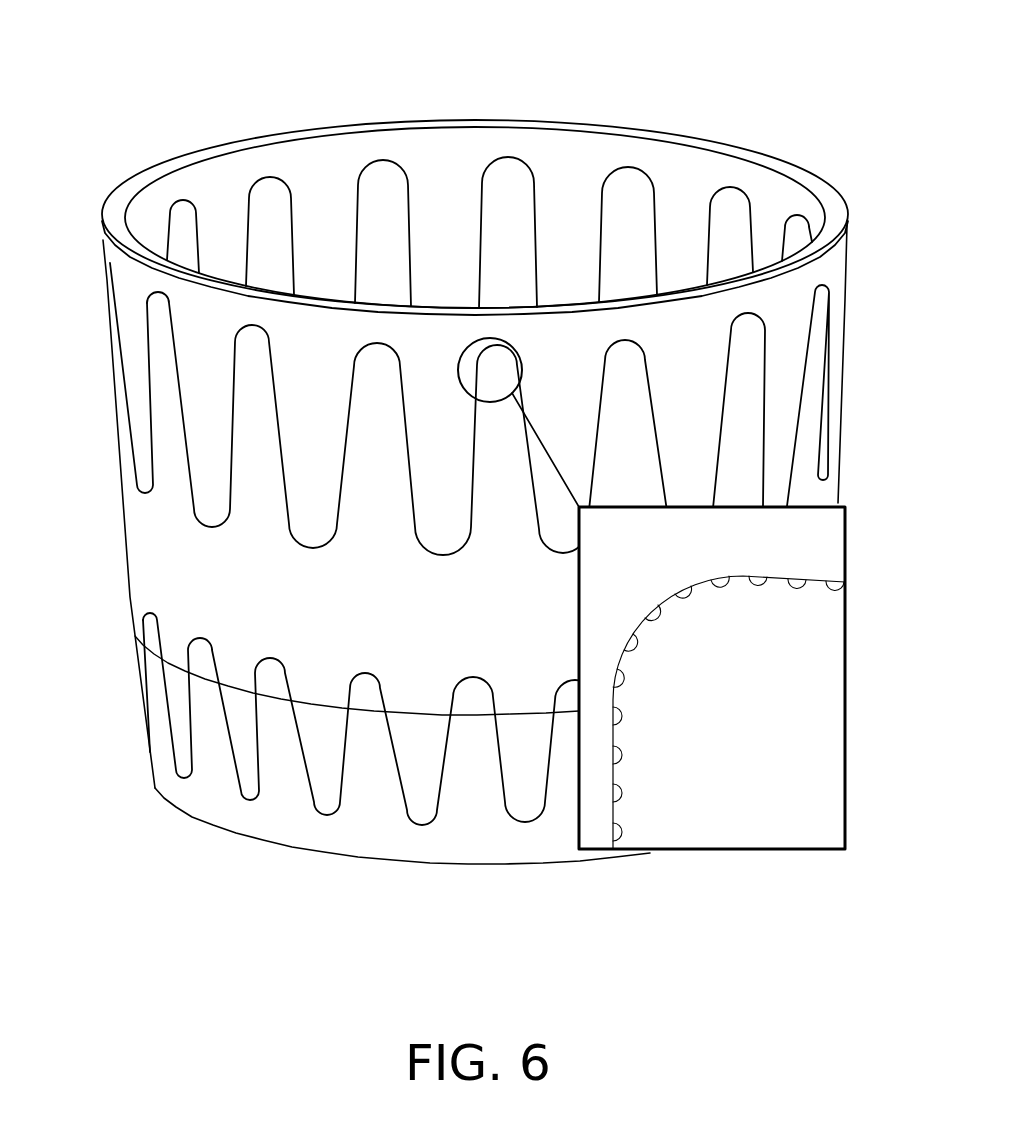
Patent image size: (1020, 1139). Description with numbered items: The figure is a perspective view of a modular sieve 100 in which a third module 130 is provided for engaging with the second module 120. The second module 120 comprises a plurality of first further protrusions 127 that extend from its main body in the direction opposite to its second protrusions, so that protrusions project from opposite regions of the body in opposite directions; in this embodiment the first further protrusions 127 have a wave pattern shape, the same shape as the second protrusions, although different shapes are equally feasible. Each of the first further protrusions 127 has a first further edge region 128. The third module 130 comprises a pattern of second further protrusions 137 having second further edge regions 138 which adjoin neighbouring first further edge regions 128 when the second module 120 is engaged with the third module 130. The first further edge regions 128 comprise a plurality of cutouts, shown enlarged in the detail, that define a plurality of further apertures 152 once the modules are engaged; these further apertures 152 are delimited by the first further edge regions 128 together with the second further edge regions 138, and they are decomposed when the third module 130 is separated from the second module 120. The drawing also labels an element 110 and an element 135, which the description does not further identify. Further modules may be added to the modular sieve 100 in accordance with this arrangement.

The modular sieve 100 is at (130, 85).
The base 110 is at (467, 864).
The second module 120 is at (162, 560).
The first further protrusions 127 is at (142, 428).
The third module 130 is at (116, 218).
The fingers 135 is at (147, 498).
The second further protrusions 137 is at (448, 142).
The further apertures 152 is at (760, 577).
The second further edge regions 138 is at (742, 583).
The first further edge regions 128 is at (650, 628).